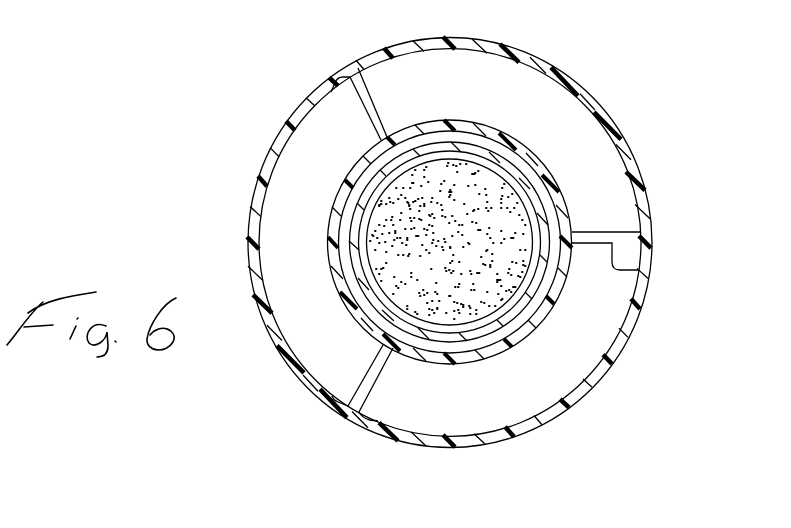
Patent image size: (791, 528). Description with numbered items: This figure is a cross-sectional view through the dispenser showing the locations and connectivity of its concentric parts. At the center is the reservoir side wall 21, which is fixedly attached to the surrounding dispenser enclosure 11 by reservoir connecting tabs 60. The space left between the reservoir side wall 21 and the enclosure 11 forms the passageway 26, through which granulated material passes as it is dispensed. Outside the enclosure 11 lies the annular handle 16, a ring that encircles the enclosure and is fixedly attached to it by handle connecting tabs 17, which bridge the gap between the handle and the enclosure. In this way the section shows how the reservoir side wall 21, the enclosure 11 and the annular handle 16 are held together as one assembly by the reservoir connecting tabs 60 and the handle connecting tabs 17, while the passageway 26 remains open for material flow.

The enclosure 11 is at (332, 246).
The annular handle 16 is at (483, 38).
The handle connecting tabs 17 is at (363, 107).
The reservoir side wall 21 is at (350, 194).
The passageway 26 is at (520, 165).
The reservoir connecting tabs 60 is at (397, 148).